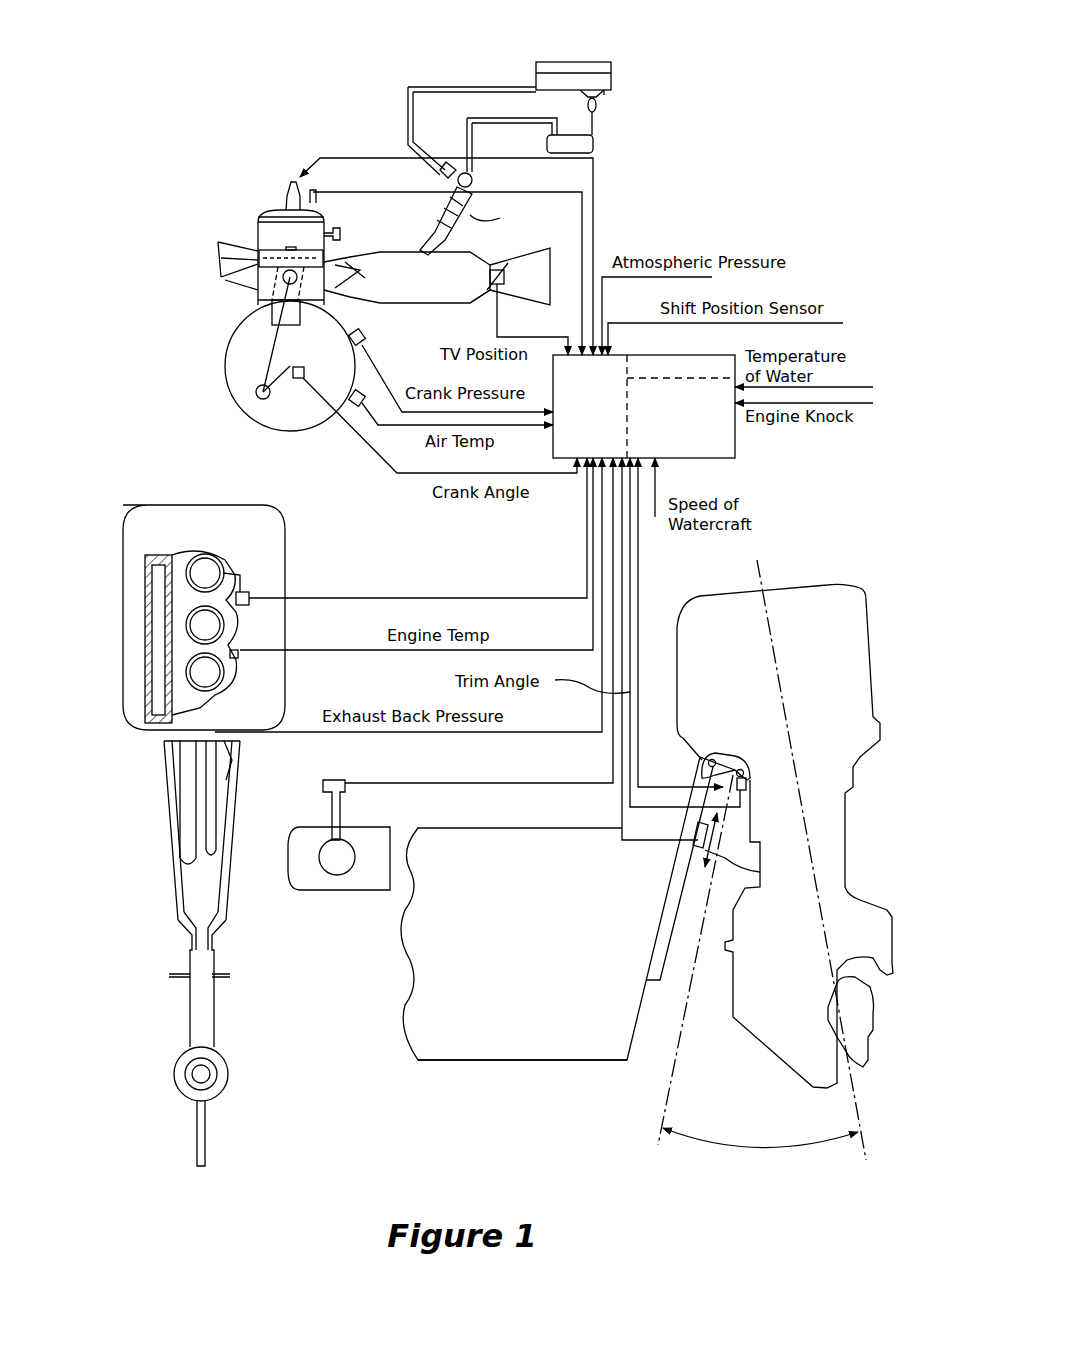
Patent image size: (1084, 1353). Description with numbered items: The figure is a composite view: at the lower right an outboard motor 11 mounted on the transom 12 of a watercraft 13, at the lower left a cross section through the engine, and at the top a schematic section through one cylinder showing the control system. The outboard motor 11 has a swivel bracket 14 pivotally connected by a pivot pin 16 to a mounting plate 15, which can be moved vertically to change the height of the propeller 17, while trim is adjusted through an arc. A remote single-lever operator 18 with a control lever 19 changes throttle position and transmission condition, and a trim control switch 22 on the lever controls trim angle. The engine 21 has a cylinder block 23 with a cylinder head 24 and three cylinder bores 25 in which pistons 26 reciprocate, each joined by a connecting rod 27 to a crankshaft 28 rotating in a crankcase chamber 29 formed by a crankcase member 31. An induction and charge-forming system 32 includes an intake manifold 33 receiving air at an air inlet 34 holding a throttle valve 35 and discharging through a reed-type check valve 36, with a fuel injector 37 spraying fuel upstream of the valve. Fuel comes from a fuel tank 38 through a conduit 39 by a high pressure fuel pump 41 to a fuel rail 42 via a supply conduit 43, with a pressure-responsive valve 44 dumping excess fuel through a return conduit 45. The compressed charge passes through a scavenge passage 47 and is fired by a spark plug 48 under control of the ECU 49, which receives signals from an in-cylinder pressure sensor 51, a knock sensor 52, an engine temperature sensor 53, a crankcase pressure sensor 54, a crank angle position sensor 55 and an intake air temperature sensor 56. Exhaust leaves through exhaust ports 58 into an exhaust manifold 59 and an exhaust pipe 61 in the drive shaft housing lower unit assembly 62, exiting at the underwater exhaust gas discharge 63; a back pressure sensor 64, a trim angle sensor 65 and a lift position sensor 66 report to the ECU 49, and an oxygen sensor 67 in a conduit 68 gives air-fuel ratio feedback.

The outboard motor 11 is at (858, 560).
The transom 12 is at (627, 1005).
The watercraft 13 is at (438, 1045).
The swivel bracket 14 is at (725, 760).
The mounting plate 15 is at (665, 920).
The pivot pin 16 is at (710, 745).
The propeller 17 is at (862, 998).
The single-lever operator 18 is at (378, 860).
The control lever 19 is at (338, 862).
The engine 21 is at (212, 170).
The trim control switch 22 is at (345, 783).
The cylinder block 23 is at (235, 300).
The cylinder head 24 is at (262, 200).
The cylinder bore 25 is at (262, 230).
The piston 26 is at (270, 312).
The connecting rod 27 is at (262, 385).
The crankshaft 28 is at (308, 372).
The crankcase chamber 29 is at (240, 398).
The crankcase member 31 is at (262, 400).
The induction and charge-forming system 32 is at (650, 92).
The intake manifold 33 is at (435, 305).
The air inlet 34 is at (530, 268).
The throttle valve 35 is at (508, 280).
The reed-type check valve 36 is at (407, 277).
The fuel injector 37 is at (500, 216).
The fuel tank 38 is at (580, 62).
The conduit 39 is at (598, 110).
The high pressure fuel pump 41 is at (593, 145).
The fuel rail 42 is at (473, 180).
The supply conduit 43 is at (520, 118).
The pressure-responsive valve 44 is at (450, 162).
The return conduit 45 is at (428, 87).
The scavenge passage 47 is at (282, 250).
The spark plug 48 is at (290, 178).
The ECU 49 is at (717, 458).
The in-cylinder pressure sensor 51 is at (318, 198).
The knock sensor 52 is at (368, 265).
The engine temperature sensor 53 is at (238, 657).
The crankcase pressure sensor 54 is at (368, 335).
The crank angle position sensor 55 is at (490, 277).
The intake air temperature sensor 56 is at (357, 408).
The exhaust port 58 is at (228, 248).
The exhaust manifold 59 is at (225, 280).
The exhaust pipe 61 is at (190, 783).
The drive shaft housing lower unit assembly 62 is at (172, 872).
The through-the-propeller underwater exhaust gas discharge 63 is at (195, 1072).
The back pressure sensor 64 is at (238, 768).
The trim angle sensor 65 is at (748, 788).
The lift position sensor 66 is at (690, 848).
The oxygen sensor 67 is at (255, 580).
The conduit 68 is at (225, 623).